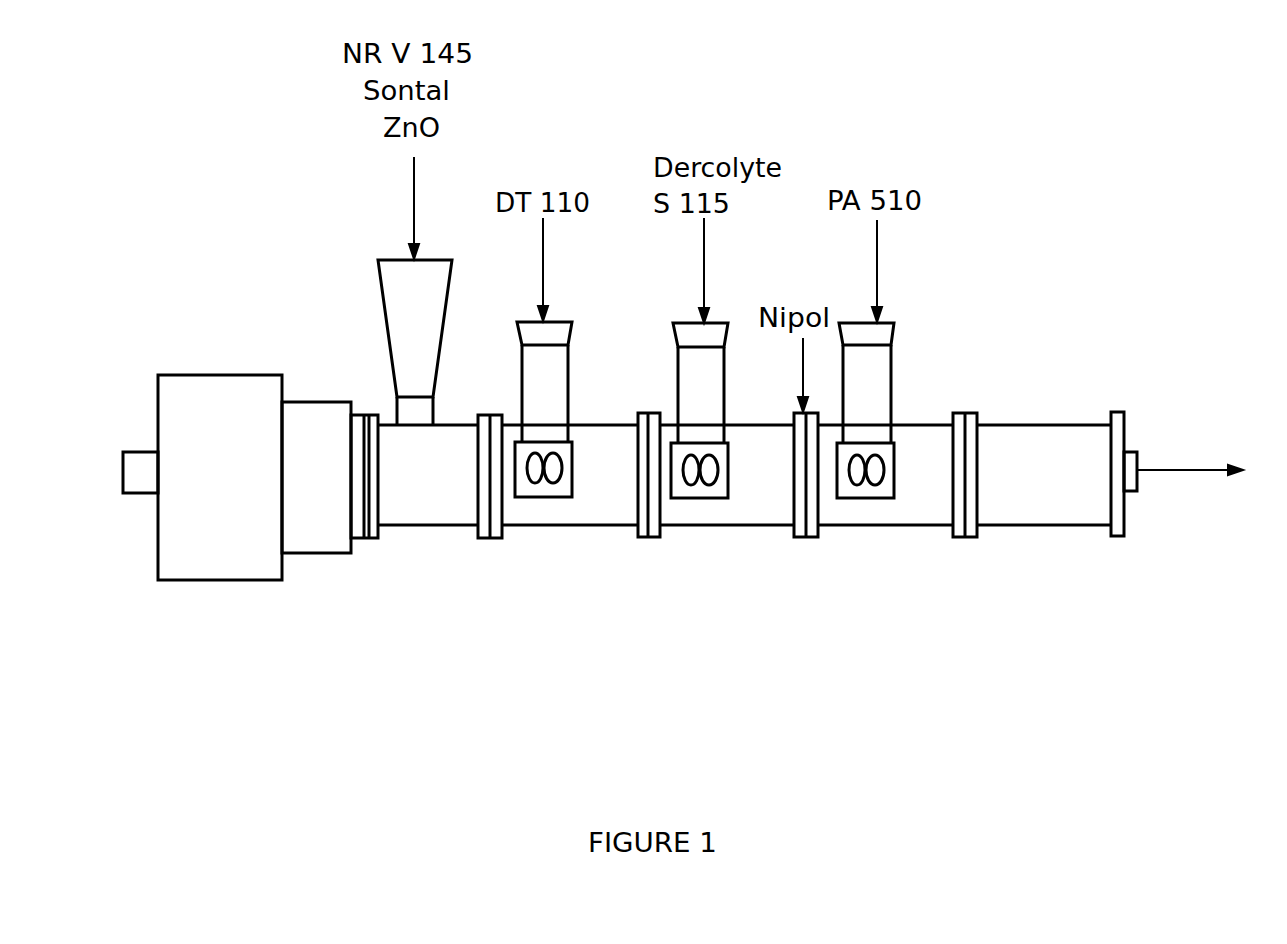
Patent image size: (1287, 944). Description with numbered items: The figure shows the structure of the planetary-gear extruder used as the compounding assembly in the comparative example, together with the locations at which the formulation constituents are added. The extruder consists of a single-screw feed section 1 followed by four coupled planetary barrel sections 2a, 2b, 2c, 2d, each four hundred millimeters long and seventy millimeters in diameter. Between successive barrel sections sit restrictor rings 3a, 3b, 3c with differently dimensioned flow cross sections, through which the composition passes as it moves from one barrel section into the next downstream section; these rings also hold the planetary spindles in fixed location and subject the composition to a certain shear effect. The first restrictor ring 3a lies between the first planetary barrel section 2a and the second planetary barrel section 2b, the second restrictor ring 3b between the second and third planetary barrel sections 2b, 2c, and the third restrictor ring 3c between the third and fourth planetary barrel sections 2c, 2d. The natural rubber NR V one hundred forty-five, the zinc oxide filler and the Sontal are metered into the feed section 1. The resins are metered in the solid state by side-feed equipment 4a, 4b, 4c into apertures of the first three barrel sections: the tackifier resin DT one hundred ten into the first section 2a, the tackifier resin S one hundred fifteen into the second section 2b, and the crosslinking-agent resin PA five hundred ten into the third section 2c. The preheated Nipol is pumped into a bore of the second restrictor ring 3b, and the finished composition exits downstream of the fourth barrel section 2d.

The single-screw feed section 1 is at (413, 495).
The first planetary barrel section 2a is at (583, 507).
The second planetary barrel section 2b is at (747, 495).
The third planetary barrel section 2c is at (927, 493).
The fourth planetary barrel section 2d is at (1036, 487).
The first restrictor ring 3a is at (640, 512).
The second restrictor ring 3b is at (802, 512).
The third restrictor ring 3c is at (970, 512).
The side-feed equipment 4a is at (560, 385).
The side-feed equipment 4b is at (690, 363).
The side-feed equipment 4c is at (879, 404).